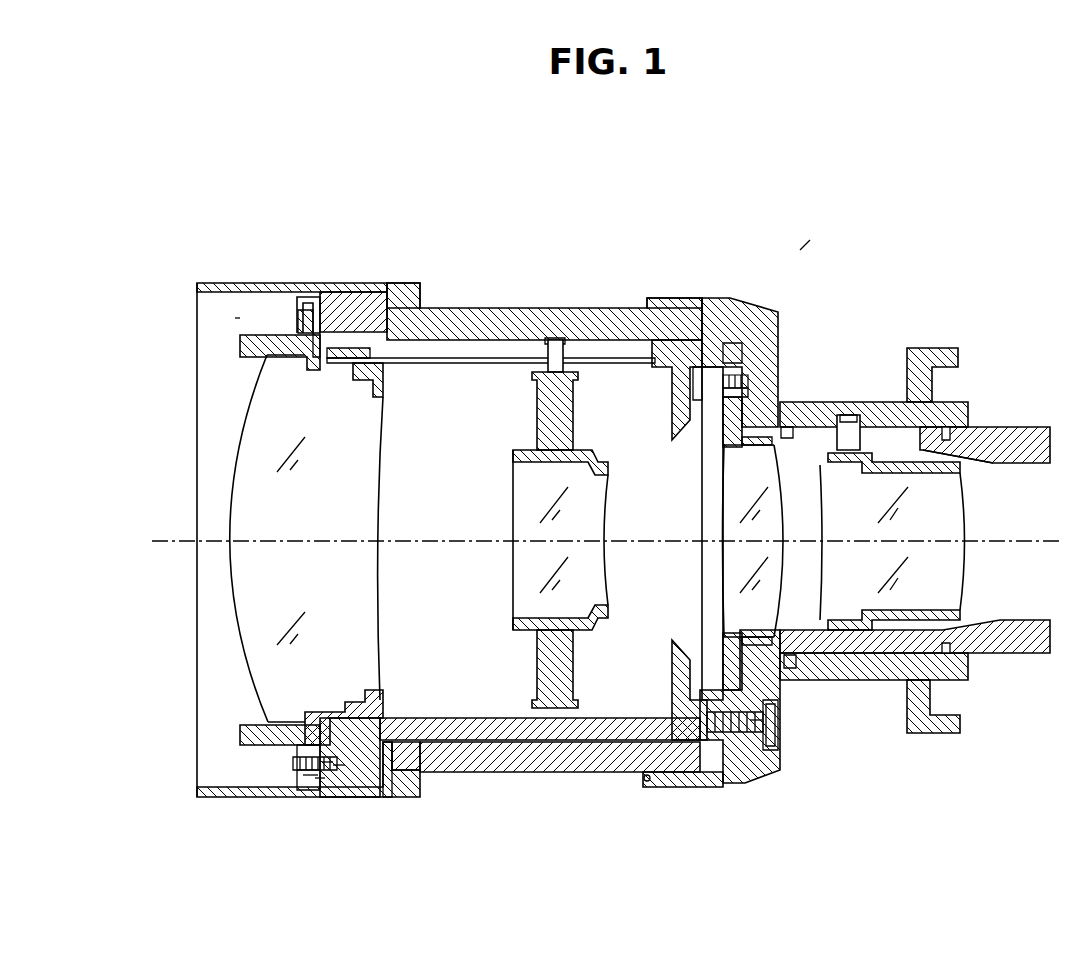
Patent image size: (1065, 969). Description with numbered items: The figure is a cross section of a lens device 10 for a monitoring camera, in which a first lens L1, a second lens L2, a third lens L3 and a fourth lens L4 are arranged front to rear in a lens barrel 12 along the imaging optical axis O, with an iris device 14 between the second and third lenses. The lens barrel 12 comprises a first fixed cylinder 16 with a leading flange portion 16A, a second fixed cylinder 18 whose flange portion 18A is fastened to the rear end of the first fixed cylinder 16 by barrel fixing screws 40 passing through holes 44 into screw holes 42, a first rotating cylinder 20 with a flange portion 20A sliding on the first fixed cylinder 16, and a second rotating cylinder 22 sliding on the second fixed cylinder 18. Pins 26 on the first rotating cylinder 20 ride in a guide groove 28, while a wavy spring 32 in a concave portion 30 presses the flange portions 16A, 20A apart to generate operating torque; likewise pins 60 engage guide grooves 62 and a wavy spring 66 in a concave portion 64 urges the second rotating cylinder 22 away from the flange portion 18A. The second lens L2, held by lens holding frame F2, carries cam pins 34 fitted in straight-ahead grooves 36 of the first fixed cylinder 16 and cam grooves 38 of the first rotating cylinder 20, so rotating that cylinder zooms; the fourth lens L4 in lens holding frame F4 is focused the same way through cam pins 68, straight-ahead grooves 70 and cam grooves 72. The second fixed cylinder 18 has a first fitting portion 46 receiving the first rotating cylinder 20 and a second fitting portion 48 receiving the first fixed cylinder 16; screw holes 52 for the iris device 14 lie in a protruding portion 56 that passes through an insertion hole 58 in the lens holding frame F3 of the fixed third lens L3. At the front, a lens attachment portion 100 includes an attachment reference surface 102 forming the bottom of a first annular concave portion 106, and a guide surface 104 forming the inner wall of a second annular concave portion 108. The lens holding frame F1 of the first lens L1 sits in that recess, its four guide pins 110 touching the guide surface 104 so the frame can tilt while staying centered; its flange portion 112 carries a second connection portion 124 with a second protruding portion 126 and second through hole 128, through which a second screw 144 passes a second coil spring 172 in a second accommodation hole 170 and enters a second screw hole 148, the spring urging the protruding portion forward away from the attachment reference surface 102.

The lens device 10 is at (811, 246).
The lens barrel 12 is at (207, 258).
The iris device 14 is at (701, 572).
The first fixed cylinder 16 is at (495, 748).
The flange portion 16A is at (358, 300).
The second fixed cylinder 18 is at (1018, 655).
The flange portion 18A is at (748, 310).
The first rotating cylinder 20 is at (440, 312).
The flange portion 20A is at (405, 295).
The second rotating cylinder 22 is at (878, 682).
The pins 26 is at (683, 338).
The guide groove 28 is at (670, 345).
The concave portion 30 is at (422, 770).
The wavy spring 32 is at (387, 772).
The cam pins 34 is at (555, 340).
The straight-ahead grooves 36 is at (607, 348).
The cam grooves 38 is at (542, 338).
The barrel fixing screws 40 is at (778, 722).
The screw holes 42 is at (722, 735).
The holes 44 is at (752, 735).
The first fitting portion 46 is at (648, 778).
The second fitting portion 48 is at (706, 784).
The screw holes 52 is at (748, 390).
The protruding portion 56 is at (731, 372).
The insertion hole 58 is at (745, 372).
The pins 60 is at (948, 430).
The guide grooves 62 is at (975, 445).
The concave portion 64 is at (797, 668).
The wavy spring 66 is at (788, 438).
The cam pins 68 is at (848, 418).
The straight-ahead grooves 70 is at (882, 456).
The cam grooves 72 is at (903, 404).
The lens attachment portion 100 is at (226, 323).
The attachment reference surface 102 is at (300, 302).
The guide surface 104 is at (332, 715).
The first annular concave portion 106 is at (200, 790).
The second annular concave portion 108 is at (382, 720).
The guide pins 110 is at (317, 340).
The flange portion 112 is at (300, 318).
The second connection portion 124 is at (292, 772).
The second protruding portion 126 is at (320, 783).
The second through hole 128 is at (307, 780).
The second screw 144 is at (283, 769).
The second screw hole 148 is at (342, 772).
The second accommodation hole 170 is at (330, 773).
The second coil spring 172 is at (312, 730).
The first lens L1 is at (262, 425).
The second lens L2 is at (512, 498).
The third lens L3 is at (724, 500).
The fourth lens L4 is at (962, 505).
The lens holding frame F1 is at (243, 343).
The lens holding frame F2 is at (538, 418).
The lens holding frame F3 is at (708, 690).
The lens holding frame F4 is at (955, 618).
The imaging optical axis O is at (597, 541).